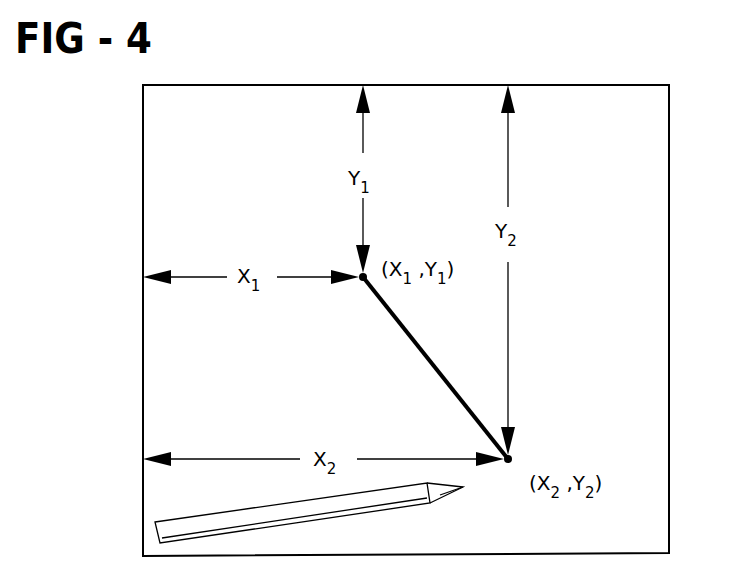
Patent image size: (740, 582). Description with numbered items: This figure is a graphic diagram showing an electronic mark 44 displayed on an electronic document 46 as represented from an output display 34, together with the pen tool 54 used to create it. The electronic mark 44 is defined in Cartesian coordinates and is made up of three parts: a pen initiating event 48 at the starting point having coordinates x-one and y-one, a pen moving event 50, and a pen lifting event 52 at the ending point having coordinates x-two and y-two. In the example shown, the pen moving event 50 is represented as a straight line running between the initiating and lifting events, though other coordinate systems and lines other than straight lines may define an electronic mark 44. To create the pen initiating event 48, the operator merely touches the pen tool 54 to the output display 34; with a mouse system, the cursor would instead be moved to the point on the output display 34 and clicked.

The output display 34 is at (143, 209).
The electronic document 46 is at (615, 184).
The pen initiating event 48 is at (362, 276).
The pen lifting event 52 is at (509, 459).
The pen moving event 50 is at (413, 343).
The electronic mark 44 is at (412, 368).
The pen tool 54 is at (377, 512).